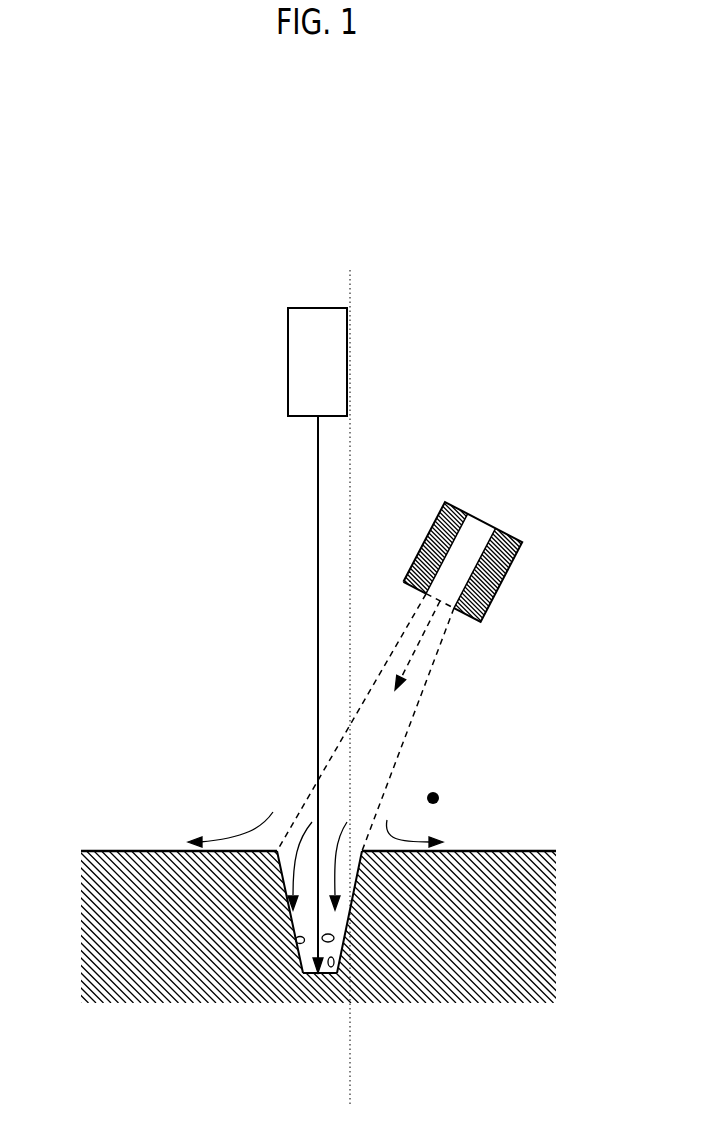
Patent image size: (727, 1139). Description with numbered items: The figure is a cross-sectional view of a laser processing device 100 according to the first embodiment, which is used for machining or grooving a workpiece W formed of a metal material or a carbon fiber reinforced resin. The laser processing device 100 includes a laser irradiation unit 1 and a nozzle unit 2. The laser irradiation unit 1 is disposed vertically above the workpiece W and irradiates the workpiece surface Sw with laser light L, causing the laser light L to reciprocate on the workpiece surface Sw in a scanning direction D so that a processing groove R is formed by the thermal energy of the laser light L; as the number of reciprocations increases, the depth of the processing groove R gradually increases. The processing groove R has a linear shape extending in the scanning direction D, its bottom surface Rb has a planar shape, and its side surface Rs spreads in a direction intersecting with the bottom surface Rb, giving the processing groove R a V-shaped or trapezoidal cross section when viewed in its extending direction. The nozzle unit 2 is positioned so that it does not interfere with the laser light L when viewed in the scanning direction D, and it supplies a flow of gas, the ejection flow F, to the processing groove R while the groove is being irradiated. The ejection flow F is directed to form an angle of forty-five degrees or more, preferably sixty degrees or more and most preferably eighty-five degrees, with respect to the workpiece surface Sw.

The laser processing device 100 is at (139, 344).
The laser irradiation unit 1 is at (347, 363).
The laser light L is at (320, 487).
The nozzle unit 2 is at (530, 540).
The ejection flow F is at (420, 702).
The scanning direction D is at (445, 799).
The workpiece surface Sw is at (520, 852).
The workpiece W is at (518, 896).
The side surface Rs is at (300, 940).
The bottom surface Rb is at (335, 975).
The processing groove R is at (380, 998).